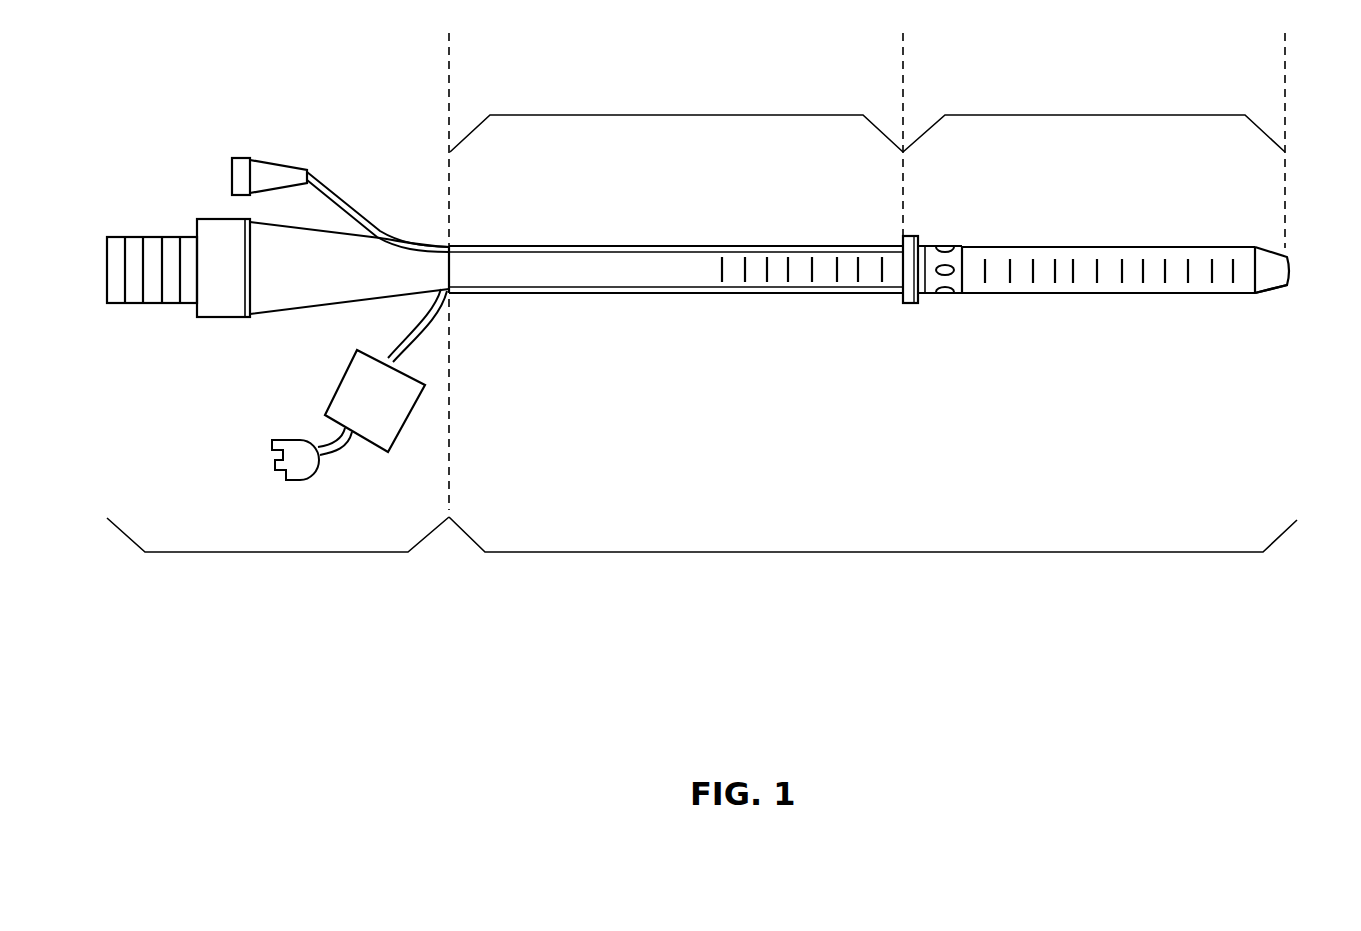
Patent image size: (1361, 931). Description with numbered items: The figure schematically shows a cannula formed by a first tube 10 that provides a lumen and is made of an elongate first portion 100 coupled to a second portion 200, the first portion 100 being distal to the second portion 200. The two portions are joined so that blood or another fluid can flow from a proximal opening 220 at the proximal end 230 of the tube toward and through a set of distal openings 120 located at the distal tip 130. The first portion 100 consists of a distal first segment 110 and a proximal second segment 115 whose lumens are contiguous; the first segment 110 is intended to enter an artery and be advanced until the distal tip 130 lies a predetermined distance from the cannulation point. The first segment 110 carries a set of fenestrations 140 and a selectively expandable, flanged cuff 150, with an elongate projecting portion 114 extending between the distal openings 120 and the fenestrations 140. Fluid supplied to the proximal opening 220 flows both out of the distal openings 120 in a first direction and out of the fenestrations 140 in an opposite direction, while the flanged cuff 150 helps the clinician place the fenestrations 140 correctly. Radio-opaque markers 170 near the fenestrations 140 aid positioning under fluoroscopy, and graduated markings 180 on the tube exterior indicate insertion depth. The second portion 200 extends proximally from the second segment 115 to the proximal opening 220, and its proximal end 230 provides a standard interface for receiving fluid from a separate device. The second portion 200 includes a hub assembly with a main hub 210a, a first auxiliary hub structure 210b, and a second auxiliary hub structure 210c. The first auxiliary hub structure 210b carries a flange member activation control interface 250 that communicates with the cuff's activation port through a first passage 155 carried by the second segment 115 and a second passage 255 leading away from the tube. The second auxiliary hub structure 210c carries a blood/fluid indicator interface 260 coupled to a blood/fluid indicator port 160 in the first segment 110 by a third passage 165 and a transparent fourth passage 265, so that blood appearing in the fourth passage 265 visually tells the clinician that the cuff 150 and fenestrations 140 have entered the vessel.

The first tube 10 is at (1240, 701).
The first portion 100 is at (873, 552).
The first segment 110 is at (1107, 115).
The elongate projecting portion 114 is at (1100, 247).
The second segment 115 is at (690, 115).
The distal openings 120 is at (1290, 270).
The distal tip 130 is at (1268, 293).
The fenestrations 140 is at (946, 248).
The flanged cuff 150 is at (900, 300).
The first passage 155 is at (640, 288).
The blood/fluid indicator port 160 is at (922, 240).
The third passage 165 is at (577, 246).
The radio-opaque markers 170 is at (924, 295).
The graduated markings 180 is at (742, 268).
The second portion 200 is at (283, 552).
The main hub 210a is at (222, 338).
The first auxiliary hub structure 210b is at (240, 427).
The second auxiliary hub structure 210c is at (246, 133).
The proximal opening 220 is at (107, 268).
The proximal end 230 is at (135, 303).
The flange member activation control interface 250 is at (293, 437).
The second passage 255 is at (403, 325).
The blood/fluid indicator interface 260 is at (232, 173).
The fourth passage 265 is at (343, 202).